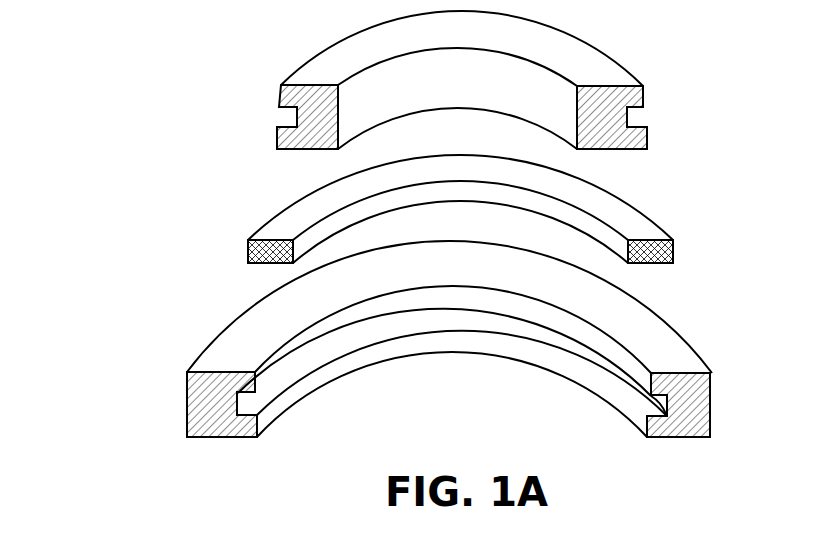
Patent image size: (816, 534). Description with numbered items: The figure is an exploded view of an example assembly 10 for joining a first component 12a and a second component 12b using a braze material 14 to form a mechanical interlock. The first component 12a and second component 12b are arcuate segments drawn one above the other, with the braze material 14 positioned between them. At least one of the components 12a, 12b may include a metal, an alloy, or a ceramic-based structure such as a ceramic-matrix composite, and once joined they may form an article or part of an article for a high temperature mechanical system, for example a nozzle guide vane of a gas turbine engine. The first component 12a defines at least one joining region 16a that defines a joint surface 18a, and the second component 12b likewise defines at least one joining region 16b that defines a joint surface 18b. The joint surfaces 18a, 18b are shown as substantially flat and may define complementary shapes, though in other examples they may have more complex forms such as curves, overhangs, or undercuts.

The assembly 10 is at (85, 43).
The first component 12a is at (187, 437).
The second component 12b is at (647, 132).
The braze material 14 is at (278, 221).
The joining region 16a is at (256, 405).
The joining region 16b is at (655, 112).
The joint surface 18a is at (320, 355).
The joint surface 18b is at (295, 118).